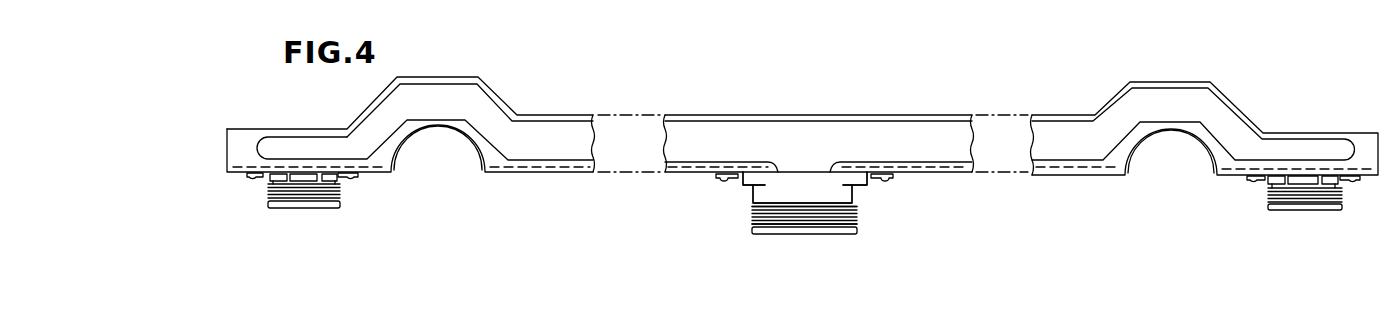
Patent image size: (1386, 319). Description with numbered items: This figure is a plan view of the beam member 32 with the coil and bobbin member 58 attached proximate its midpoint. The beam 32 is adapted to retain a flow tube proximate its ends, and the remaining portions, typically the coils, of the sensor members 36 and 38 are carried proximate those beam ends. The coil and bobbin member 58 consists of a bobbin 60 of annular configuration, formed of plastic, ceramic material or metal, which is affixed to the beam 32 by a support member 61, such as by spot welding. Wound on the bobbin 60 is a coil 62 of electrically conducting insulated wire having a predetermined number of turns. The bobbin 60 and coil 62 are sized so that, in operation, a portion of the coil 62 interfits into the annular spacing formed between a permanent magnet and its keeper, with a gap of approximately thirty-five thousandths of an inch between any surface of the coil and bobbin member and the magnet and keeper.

The beam member 32 is at (1063, 126).
The sensor member 36 is at (330, 209).
The sensor member 38 is at (1305, 210).
The coil and bobbin member 58 is at (781, 269).
The bobbin 60 is at (847, 191).
The support member 61 is at (734, 179).
The coil 62 is at (757, 218).